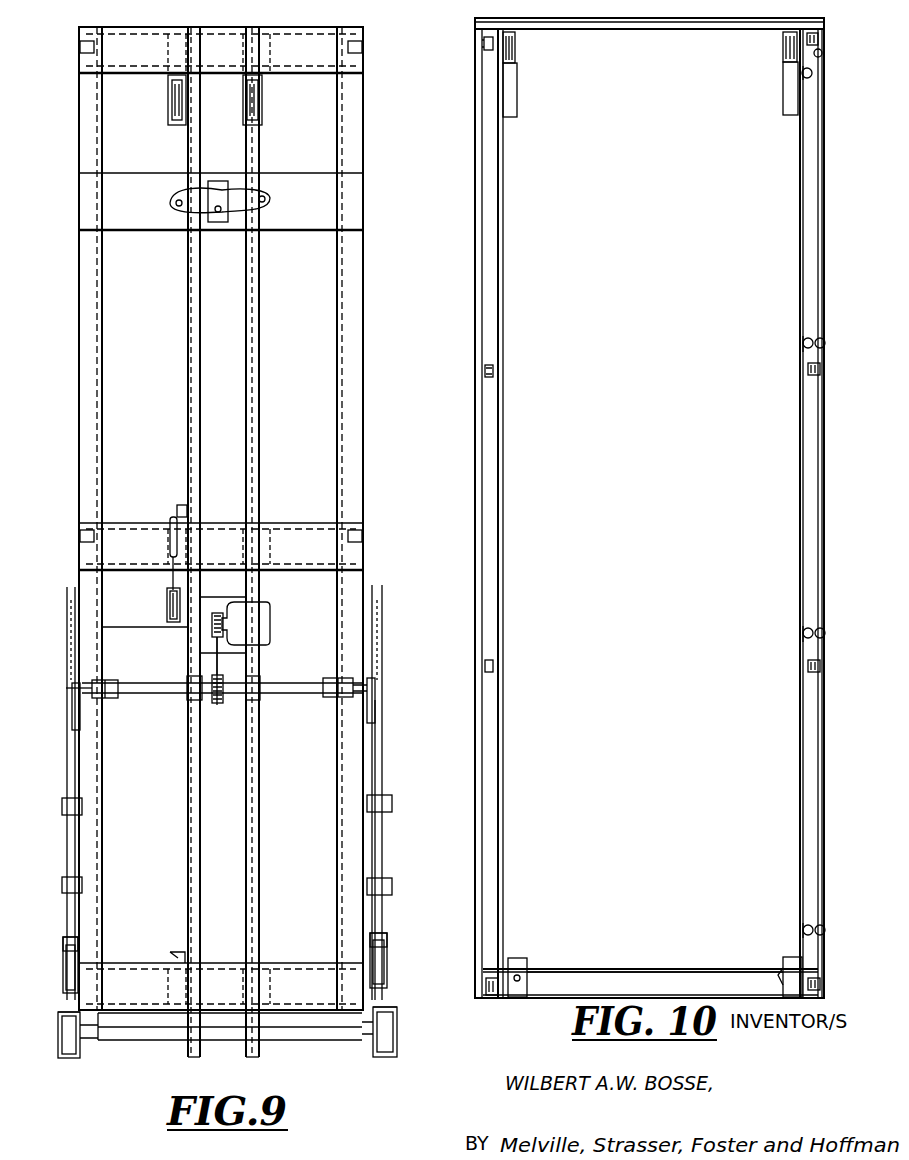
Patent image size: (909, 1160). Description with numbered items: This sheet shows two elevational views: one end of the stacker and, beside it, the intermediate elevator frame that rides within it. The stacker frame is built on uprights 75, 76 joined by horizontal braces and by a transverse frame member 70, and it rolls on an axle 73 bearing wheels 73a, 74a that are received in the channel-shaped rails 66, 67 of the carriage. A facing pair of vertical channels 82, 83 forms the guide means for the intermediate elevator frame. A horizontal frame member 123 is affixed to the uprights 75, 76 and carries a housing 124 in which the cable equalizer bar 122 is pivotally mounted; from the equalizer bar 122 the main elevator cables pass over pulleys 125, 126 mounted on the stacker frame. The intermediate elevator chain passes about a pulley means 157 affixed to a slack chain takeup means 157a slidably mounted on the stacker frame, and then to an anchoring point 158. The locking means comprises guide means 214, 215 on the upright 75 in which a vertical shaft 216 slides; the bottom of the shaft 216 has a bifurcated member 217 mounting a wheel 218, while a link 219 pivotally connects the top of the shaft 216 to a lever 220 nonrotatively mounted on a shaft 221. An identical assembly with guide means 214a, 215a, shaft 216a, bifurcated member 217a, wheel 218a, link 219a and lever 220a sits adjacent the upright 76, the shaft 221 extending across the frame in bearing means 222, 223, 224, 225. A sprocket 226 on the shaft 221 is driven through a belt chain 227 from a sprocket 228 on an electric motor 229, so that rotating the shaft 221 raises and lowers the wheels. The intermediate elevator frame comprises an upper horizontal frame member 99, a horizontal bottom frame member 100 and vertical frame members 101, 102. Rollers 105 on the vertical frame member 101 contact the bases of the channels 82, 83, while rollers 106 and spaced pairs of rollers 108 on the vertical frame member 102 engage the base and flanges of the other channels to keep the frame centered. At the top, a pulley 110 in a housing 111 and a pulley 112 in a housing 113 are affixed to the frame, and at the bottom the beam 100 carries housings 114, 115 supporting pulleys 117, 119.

In FIG. 9, the rail 66 is at (397, 1030).
In FIG. 9, the rail 67 is at (58, 1020).
In FIG. 9, the transverse frame member 70 is at (300, 968).
In FIG. 9, the axle 73 is at (148, 1037).
In FIG. 9, the wheel 73a is at (70, 1058).
In FIG. 9, the wheel 74a is at (380, 1040).
In FIG. 9, the upright 75 is at (100, 385).
In FIG. 9, the upright 76 is at (337, 322).
In FIG. 9, the vertical channel 82 is at (188, 325).
In FIG. 9, the vertical channel 83 is at (253, 300).
In FIG. 9, the cable equalizer bar 122 is at (260, 200).
In FIG. 9, the horizontal frame member 123 is at (287, 218).
In FIG. 9, the housing 124 is at (218, 182).
In FIG. 9, the pulley 125 is at (262, 108).
In FIG. 9, the pulley 126 is at (168, 108).
In FIG. 9, the pulley means 157 is at (167, 612).
In FIG. 9, the slack chain takeup means 157a is at (142, 627).
In FIG. 9, the anchoring point 158 is at (172, 528).
In FIG. 9, the guide means 214 is at (62, 808).
In FIG. 9, the guide means 214a is at (392, 804).
In FIG. 9, the guide means 215 is at (62, 885).
In FIG. 9, the guide means 215a is at (392, 887).
In FIG. 9, the vertical shaft 216 is at (67, 752).
In FIG. 9, the vertical shaft 216a is at (383, 752).
In FIG. 9, the bifurcated member 217 is at (63, 942).
In FIG. 9, the bifurcated member 217a is at (387, 940).
In FIG. 9, the wheel 218 is at (63, 972).
In FIG. 9, the wheel 218a is at (387, 982).
In FIG. 9, the link 219 is at (115, 684).
In FIG. 9, the link 219a is at (385, 622).
In FIG. 9, the lever 220 is at (70, 700).
In FIG. 9, the lever 220a is at (380, 706).
In FIG. 9, the shaft 221 is at (152, 693).
In FIG. 9, the bearing means 222 is at (100, 698).
In FIG. 9, the bearing means 223 is at (192, 703).
In FIG. 9, the bearing means 224 is at (262, 690).
In FIG. 9, the bearing means 225 is at (330, 700).
In FIG. 9, the sprocket 226 is at (220, 708).
In FIG. 9, the belt chain 227 is at (225, 656).
In FIG. 9, the sprocket 228 is at (212, 610).
In FIG. 9, the electric motor 229 is at (271, 616).
In FIG. 10, the horizontal frame member 99 is at (687, 24).
In FIG. 10, the horizontal bottom frame member 100 is at (557, 1001).
In FIG. 10, the vertical frame member 101 is at (474, 407).
In FIG. 10, the vertical frame member 102 is at (826, 430).
In FIG. 10, the rollers 105 is at (482, 44).
In FIG. 10, the rollers 106 is at (822, 40).
In FIG. 10, the pairs of rollers 108 is at (822, 53).
In FIG. 10, the pulley 110 is at (515, 48).
In FIG. 10, the housing 111 is at (517, 72).
In FIG. 10, the pulley 112 is at (783, 48).
In FIG. 10, the housing 113 is at (783, 92).
In FIG. 10, the housing 114 is at (518, 960).
In FIG. 10, the housing 115 is at (790, 957).
In FIG. 10, the pulley 117 is at (540, 972).
In FIG. 10, the pulley 119 is at (778, 976).